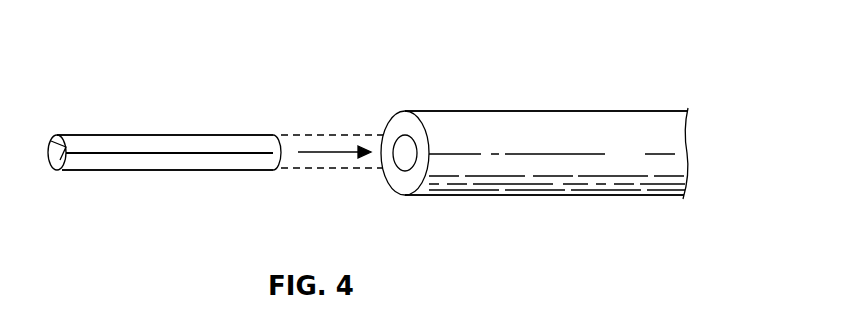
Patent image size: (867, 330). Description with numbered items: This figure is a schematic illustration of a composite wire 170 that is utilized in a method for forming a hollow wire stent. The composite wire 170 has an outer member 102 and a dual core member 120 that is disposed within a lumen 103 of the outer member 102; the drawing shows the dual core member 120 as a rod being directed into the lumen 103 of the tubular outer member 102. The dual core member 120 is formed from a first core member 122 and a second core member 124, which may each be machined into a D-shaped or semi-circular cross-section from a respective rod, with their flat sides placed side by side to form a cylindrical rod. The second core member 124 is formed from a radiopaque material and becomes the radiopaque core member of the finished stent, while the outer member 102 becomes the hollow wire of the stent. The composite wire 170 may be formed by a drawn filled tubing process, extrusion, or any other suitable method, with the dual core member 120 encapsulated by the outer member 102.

The dual core member 120 is at (174, 88).
The first core member 122 is at (115, 143).
The second core member 124 is at (133, 168).
The composite wire 170 is at (538, 52).
The outer member 102 is at (650, 120).
The lumen 103 is at (407, 168).